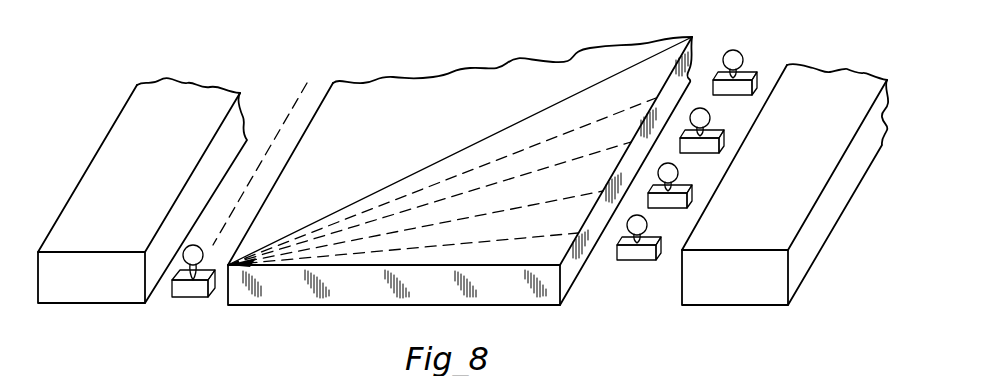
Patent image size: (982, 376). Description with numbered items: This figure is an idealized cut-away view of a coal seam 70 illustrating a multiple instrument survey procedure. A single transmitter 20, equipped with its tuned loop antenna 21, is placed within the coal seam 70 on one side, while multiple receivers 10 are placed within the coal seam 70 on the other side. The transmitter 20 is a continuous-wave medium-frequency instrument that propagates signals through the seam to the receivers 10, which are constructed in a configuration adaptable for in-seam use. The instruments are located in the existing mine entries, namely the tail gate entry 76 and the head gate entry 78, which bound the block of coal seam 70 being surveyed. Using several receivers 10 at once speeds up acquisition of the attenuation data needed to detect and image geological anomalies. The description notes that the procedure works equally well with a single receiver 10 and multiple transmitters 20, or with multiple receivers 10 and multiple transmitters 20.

The coal seam 70 is at (135, 165).
The receiver 10 is at (743, 91).
The transmitter 20 is at (177, 276).
The tuned loop antenna 21 is at (183, 252).
The tail gate entry 76 is at (222, 295).
The head gate entry 78 is at (635, 292).